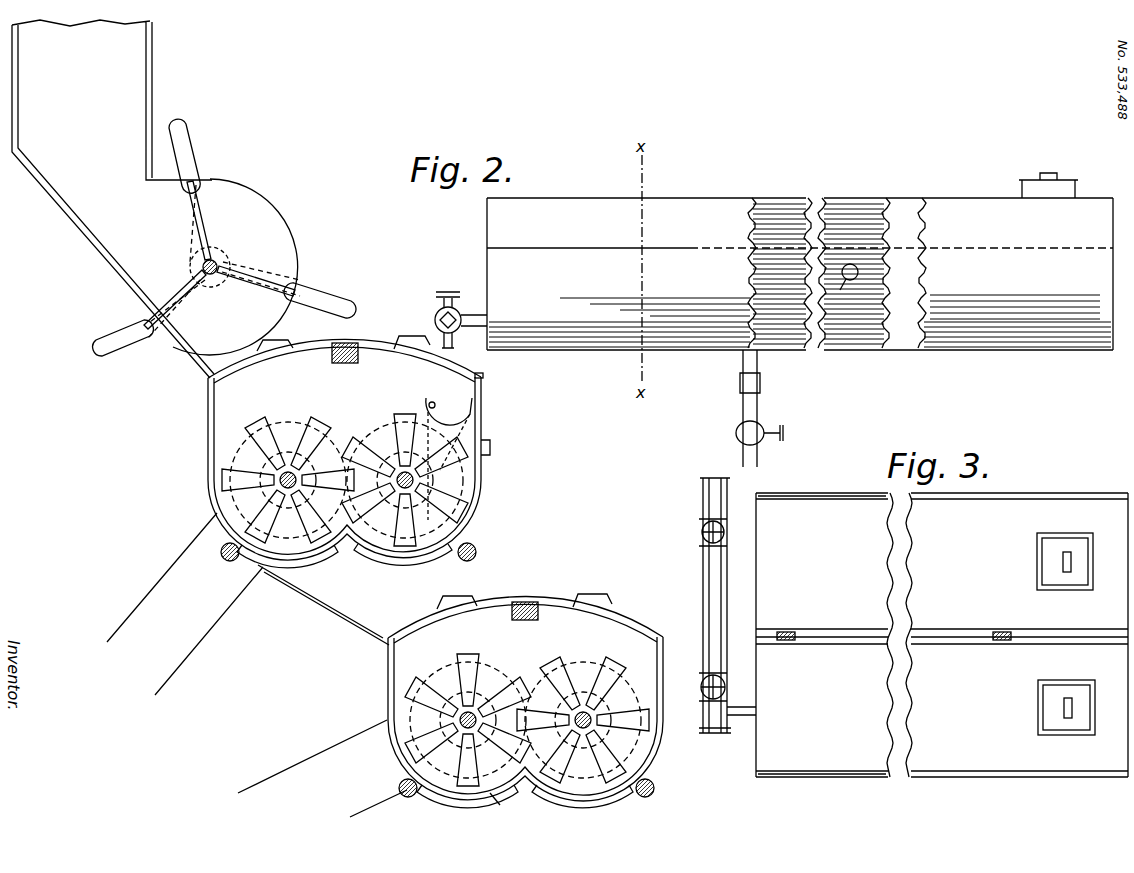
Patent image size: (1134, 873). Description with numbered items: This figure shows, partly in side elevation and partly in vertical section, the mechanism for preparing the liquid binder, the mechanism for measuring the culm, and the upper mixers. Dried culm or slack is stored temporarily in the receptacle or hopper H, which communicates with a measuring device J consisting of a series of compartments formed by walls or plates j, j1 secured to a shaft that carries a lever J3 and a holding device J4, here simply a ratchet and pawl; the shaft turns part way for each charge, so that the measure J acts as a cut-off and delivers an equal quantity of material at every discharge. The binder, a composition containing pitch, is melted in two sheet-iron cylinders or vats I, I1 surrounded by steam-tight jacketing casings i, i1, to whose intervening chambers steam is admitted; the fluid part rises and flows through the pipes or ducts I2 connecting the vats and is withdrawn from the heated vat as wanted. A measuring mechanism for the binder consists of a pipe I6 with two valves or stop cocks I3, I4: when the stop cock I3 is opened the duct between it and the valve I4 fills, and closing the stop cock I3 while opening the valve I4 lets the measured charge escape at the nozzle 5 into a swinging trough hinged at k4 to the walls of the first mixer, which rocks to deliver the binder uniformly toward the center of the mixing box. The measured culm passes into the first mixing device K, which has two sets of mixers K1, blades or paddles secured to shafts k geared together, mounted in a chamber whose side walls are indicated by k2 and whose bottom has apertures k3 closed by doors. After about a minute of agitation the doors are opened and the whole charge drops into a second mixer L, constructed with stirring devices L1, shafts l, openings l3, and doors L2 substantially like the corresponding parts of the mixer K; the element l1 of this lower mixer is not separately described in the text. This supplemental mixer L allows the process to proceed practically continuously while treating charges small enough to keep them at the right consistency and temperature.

In FIG. 2, the receptacle H is at (95, 105).
In FIG. 2, the measuring device J is at (290, 192).
In FIG. 2, the wall or plate j is at (219, 255).
In FIG. 2, the lever J3 is at (222, 152).
In FIG. 2, the holding device J4 is at (200, 256).
In FIG. 2, the wall or plate j1 is at (224, 304).
In FIG. 2, the first mixing device K is at (192, 439).
In FIG. 2, the mixers K1 is at (282, 414).
In FIG. 2, the shafts k is at (346, 480).
In FIG. 2, the side walls k2 is at (452, 578).
In FIG. 2, the apertures k3 is at (386, 566).
In FIG. 2, the hinge k4 is at (433, 402).
In FIG. 2, the valve or stop cock I4 is at (482, 377).
In FIG. 3, the valve or stop cock I4 is at (700, 542).
In FIG. 2, the nozzle 5 is at (408, 345).
In FIG. 2, the second mixer L is at (590, 594).
In FIG. 2, the agitating or stirring devices L1 is at (480, 653).
In FIG. 2, the shafts l is at (527, 720).
In FIG. 2, the openings l3 is at (588, 758).
In FIG. 2, the lower vessel gate l1 is at (506, 801).
In FIG. 2, the doors L2 is at (651, 792).
In FIG. 2, the cylinder or vat I is at (690, 195).
In FIG. 3, the cylinder or vat I is at (972, 699).
In FIG. 2, the jacketing cylinder or casing i is at (975, 280).
In FIG. 3, the jacketing cylinder or casing i is at (822, 787).
In FIG. 2, the jacketing cylinder or casing i1 is at (708, 350).
In FIG. 3, the jacketing cylinder or casing i1 is at (822, 483).
In FIG. 2, the pipes or ducts I2 is at (848, 284).
In FIG. 3, the cylinder or vat I1 is at (972, 563).
In FIG. 3, the valve or stop cock I3 is at (726, 687).
In FIG. 3, the pipe I6 is at (700, 608).